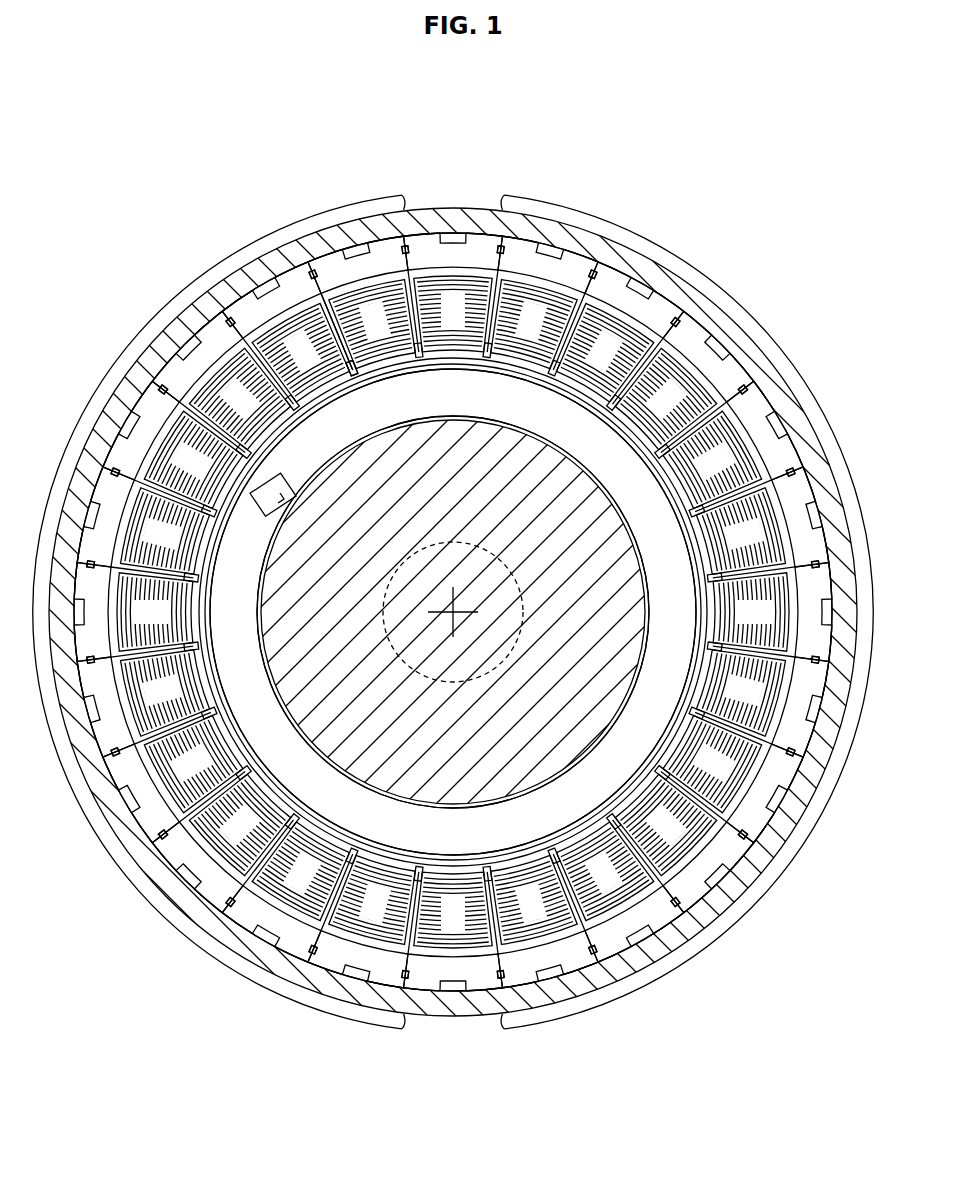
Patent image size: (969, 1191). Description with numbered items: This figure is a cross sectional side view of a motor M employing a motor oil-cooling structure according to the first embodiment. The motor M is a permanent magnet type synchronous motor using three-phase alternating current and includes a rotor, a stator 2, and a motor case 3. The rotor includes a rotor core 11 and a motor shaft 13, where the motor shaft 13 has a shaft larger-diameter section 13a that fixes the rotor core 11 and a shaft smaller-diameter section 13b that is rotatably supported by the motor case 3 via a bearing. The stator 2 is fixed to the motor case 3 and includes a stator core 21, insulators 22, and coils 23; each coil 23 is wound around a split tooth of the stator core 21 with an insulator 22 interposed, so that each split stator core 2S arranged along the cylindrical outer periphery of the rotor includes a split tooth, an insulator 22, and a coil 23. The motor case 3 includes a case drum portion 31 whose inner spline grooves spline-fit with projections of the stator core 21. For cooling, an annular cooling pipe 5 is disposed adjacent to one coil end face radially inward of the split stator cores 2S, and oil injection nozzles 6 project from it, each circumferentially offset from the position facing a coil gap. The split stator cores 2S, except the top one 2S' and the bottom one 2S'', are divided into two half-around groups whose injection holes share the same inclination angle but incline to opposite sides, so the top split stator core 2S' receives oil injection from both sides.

The motor M is at (231, 184).
The stator 2 is at (485, 596).
The split stator core 2S is at (453, 612).
The top split stator core 2S' is at (453, 295).
The bottom split stator core 2S'' is at (453, 928).
The motor case 3 is at (467, 204).
The case drum portion 31 is at (367, 230).
The stator core 21 is at (727, 383).
The insulator 22 is at (772, 497).
The coil 23 is at (762, 527).
The annular cooling pipe 5 is at (455, 362).
The oil injection nozzle 6 is at (346, 373).
The rotor core 11 is at (648, 707).
The motor shaft 13 is at (449, 613).
The shaft larger-diameter section 13a is at (487, 811).
The shaft smaller-diameter section 13b is at (524, 657).